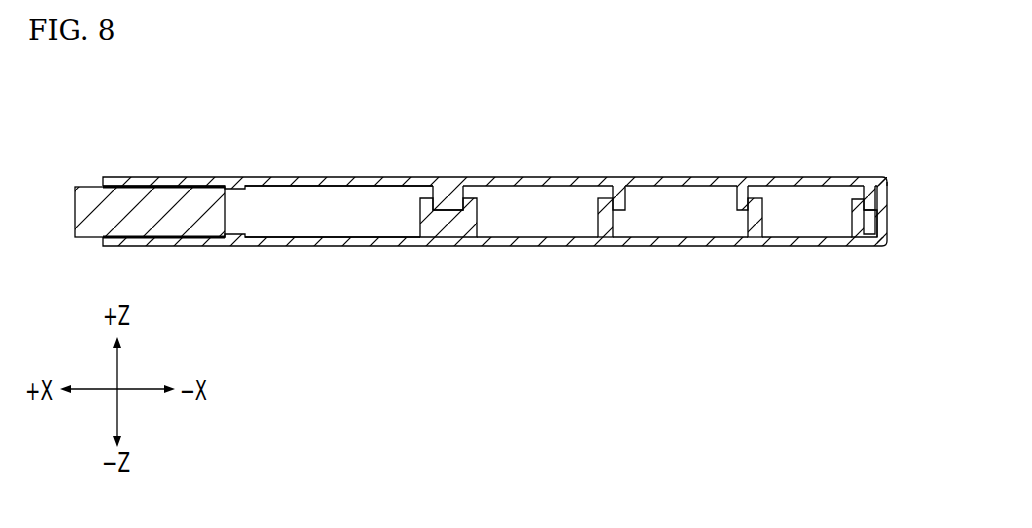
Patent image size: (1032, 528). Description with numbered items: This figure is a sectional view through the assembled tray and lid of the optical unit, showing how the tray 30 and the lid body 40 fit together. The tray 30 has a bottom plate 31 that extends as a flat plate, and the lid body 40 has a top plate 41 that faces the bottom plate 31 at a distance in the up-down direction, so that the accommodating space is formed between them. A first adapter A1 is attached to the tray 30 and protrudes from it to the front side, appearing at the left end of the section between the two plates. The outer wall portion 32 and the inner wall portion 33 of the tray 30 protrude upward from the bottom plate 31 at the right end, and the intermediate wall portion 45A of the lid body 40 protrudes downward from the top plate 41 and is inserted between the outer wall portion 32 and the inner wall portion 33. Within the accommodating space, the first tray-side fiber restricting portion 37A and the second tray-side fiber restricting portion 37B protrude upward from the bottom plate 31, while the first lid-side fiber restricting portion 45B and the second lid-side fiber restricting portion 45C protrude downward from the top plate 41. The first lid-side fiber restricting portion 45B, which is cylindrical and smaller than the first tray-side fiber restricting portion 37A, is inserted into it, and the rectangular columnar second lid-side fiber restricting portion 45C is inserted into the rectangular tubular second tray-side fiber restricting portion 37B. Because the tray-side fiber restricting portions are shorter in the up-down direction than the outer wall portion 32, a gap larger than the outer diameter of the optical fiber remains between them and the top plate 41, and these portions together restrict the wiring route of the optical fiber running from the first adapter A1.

The first adapter A1 is at (140, 203).
The lid body 40 is at (311, 168).
The top plate 41 is at (393, 185).
The second lid-side fiber restricting portion 45C is at (452, 190).
The first lid-side fiber restricting portion 45B is at (619, 199).
The intermediate wall portion 45A is at (868, 199).
The second tray-side fiber restricting portion 37B is at (428, 221).
The first tray-side fiber restricting portion 37A is at (607, 228).
The inner wall portion 33 is at (858, 210).
The outer wall portion 32 is at (882, 215).
The tray 30 is at (295, 256).
The bottom plate 31 is at (377, 242).